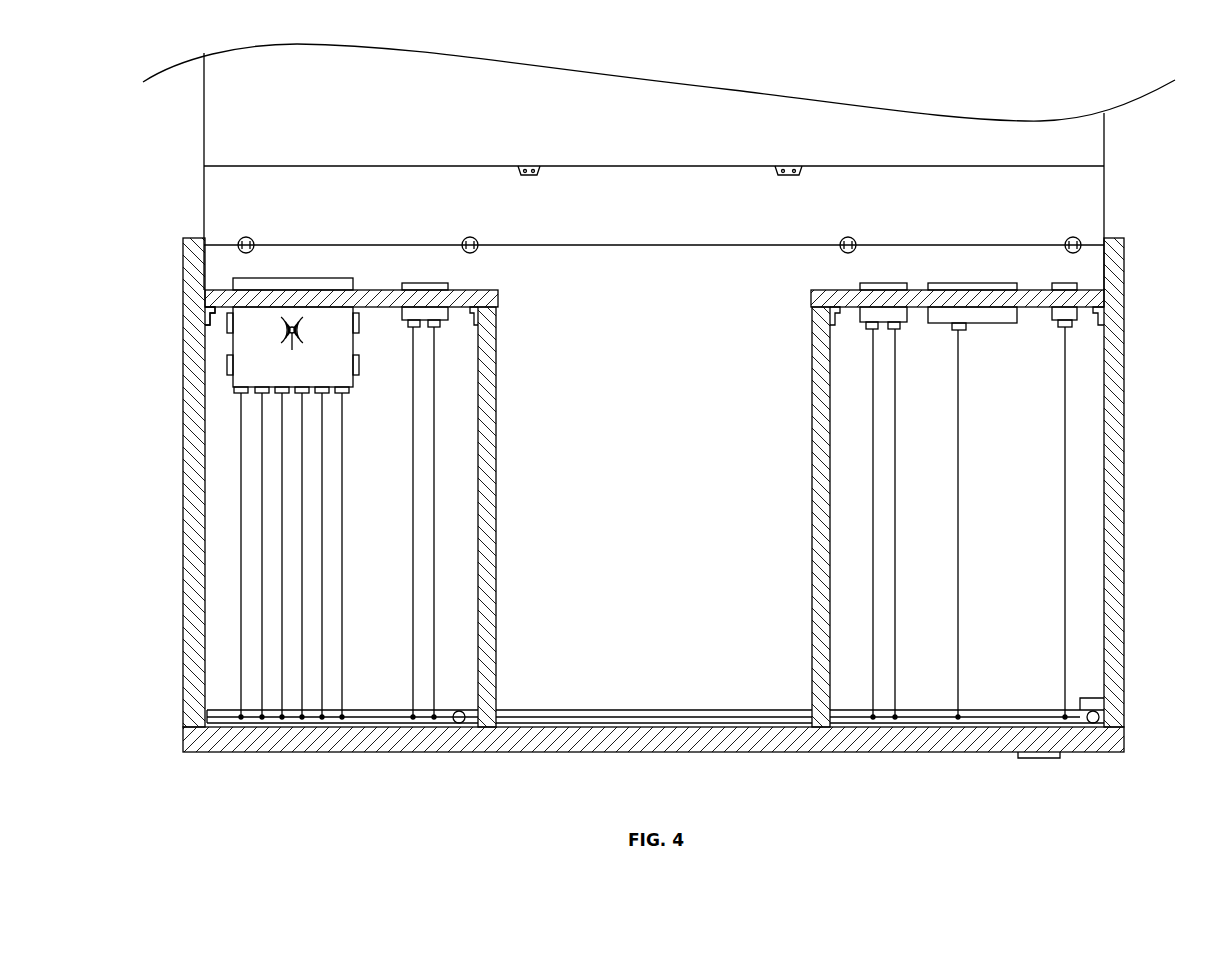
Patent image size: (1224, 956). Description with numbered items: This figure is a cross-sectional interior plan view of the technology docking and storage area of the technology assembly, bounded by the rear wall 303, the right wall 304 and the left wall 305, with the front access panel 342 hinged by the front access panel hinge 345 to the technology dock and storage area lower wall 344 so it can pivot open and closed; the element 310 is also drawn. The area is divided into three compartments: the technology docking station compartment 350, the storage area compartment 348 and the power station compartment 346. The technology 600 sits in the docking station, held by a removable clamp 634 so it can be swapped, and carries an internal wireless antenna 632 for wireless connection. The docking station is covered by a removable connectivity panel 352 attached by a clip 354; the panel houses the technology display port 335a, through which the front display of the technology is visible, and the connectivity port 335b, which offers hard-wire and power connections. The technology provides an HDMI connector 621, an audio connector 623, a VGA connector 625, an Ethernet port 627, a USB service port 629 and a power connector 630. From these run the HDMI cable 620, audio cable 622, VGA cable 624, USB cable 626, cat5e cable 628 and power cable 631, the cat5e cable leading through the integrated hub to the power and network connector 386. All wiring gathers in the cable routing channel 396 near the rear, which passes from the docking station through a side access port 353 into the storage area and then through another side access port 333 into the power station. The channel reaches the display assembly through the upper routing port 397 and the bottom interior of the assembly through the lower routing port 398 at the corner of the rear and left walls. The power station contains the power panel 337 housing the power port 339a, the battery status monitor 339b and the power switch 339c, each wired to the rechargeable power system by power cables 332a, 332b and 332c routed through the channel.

The enclosure top 310 is at (1080, 150).
The front access panel 342 is at (1080, 210).
The technology dock and storage area lower wall 344 is at (637, 278).
The front access panel hinge 345 is at (848, 238).
The right wall 304 is at (195, 630).
The left wall 305 is at (1118, 420).
The rear wall 303 is at (465, 742).
The power and network connector 386 is at (1038, 756).
The connectivity panel 352 is at (386, 297).
The power panel 337 is at (1095, 295).
The side access port 353 is at (487, 730).
The side access port 333 is at (820, 720).
The clip 354 is at (480, 300).
The technology display port 335a is at (246, 300).
The connectivity port 335b is at (414, 283).
The technology 600 is at (295, 280).
The internal wireless antenna 632 is at (272, 333).
The removable clamp 634 is at (215, 313).
The USB service port 629 is at (242, 393).
The Ethernet port 627 is at (263, 394).
The VGA connector 625 is at (283, 394).
The HDMI connector 621 is at (303, 394).
The audio connector 623 is at (323, 394).
The power connector 630 is at (343, 394).
The USB cable 626 is at (231, 556).
The cat5e cable 628 is at (252, 556).
The VGA cable 624 is at (272, 556).
The HDMI cable 620 is at (292, 556).
The audio cable 622 is at (312, 556).
The power cable 631 is at (378, 523).
The power port 339a is at (876, 283).
The battery status monitor 339b is at (934, 283).
The power switch 339c is at (1073, 283).
The power cable 332a is at (873, 524).
The power cable 332b is at (947, 524).
The power cable 332c is at (1054, 523).
The technology docking station compartment 350 is at (375, 703).
The cable routing channel 396 is at (720, 712).
The storage area compartment 348 is at (653, 683).
The power station compartment 346 is at (977, 698).
The upper routing port 397 is at (458, 725).
The lower routing port 398 is at (1098, 705).